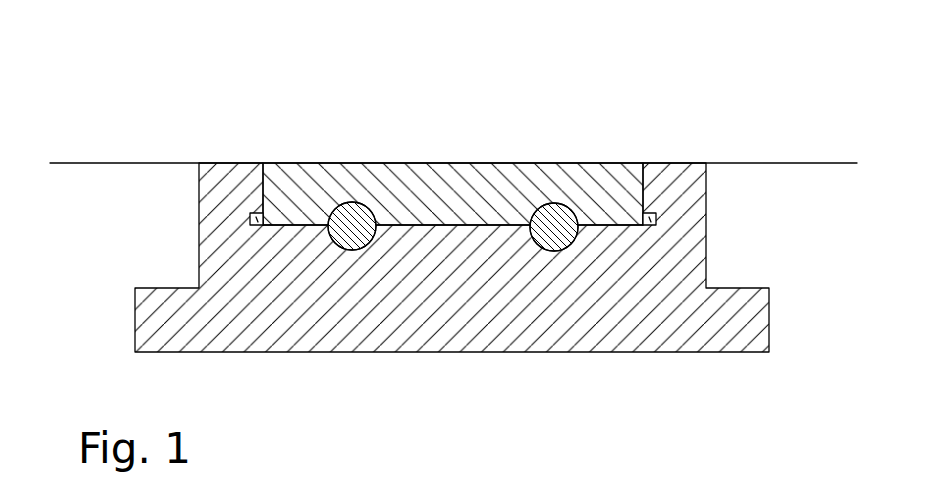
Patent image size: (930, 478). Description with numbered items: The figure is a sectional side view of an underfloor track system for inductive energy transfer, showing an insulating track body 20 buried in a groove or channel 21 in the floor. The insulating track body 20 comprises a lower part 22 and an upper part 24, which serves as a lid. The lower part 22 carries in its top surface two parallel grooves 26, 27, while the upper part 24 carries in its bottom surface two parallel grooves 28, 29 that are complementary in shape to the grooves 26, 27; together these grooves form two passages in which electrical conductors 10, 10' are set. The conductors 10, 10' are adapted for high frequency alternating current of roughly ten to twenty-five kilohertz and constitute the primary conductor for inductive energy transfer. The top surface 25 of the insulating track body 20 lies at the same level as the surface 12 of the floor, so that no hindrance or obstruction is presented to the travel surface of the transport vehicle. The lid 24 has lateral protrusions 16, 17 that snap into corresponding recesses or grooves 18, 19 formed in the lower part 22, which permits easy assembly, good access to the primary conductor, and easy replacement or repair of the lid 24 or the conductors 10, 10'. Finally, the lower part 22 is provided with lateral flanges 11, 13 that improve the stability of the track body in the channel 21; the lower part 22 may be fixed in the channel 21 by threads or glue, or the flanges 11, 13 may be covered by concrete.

The electrical conductor 10 is at (549, 164).
The electrical conductor 10' is at (340, 164).
The lateral flange 11 is at (165, 327).
The surface of the floor 12 is at (90, 162).
The lateral flange 13 is at (738, 323).
The lateral protrusion 16 is at (254, 226).
The lateral protrusion 17 is at (653, 224).
The recess 18 is at (254, 218).
The recess 19 is at (651, 216).
The insulating track body 20 is at (699, 78).
The groove or channel 21 is at (706, 262).
The lower part 22 is at (565, 337).
The upper part 24 is at (470, 188).
The top surface 25 is at (646, 138).
The groove 26 is at (347, 252).
The groove 27 is at (547, 252).
The groove 28 is at (578, 210).
The groove 29 is at (358, 210).